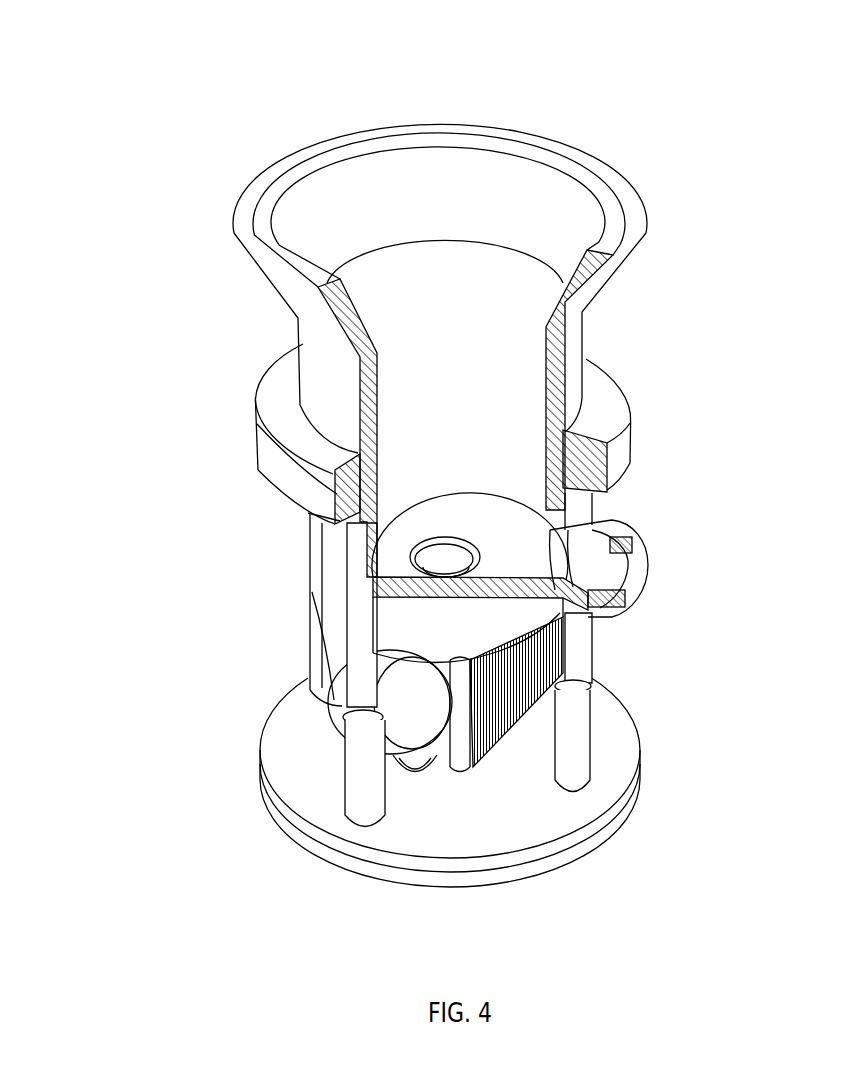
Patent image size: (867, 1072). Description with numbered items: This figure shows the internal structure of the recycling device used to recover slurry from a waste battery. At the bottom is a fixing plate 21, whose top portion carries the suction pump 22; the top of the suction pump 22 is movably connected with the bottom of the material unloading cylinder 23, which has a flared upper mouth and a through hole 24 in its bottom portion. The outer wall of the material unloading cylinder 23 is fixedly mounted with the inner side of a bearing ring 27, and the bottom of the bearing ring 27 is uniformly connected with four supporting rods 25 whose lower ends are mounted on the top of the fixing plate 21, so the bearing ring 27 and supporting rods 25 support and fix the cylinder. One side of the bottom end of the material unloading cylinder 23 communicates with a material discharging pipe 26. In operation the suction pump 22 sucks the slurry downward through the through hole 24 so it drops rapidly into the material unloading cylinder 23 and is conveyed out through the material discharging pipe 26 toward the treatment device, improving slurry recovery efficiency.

The fixing plate 21 is at (315, 807).
The suction pump 22 is at (423, 737).
The material unloading cylinder 23 is at (322, 203).
The through hole 24 is at (452, 557).
The supporting rod 25 is at (627, 753).
The material discharging pipe 26 is at (635, 587).
The bearing ring 27 is at (605, 393).